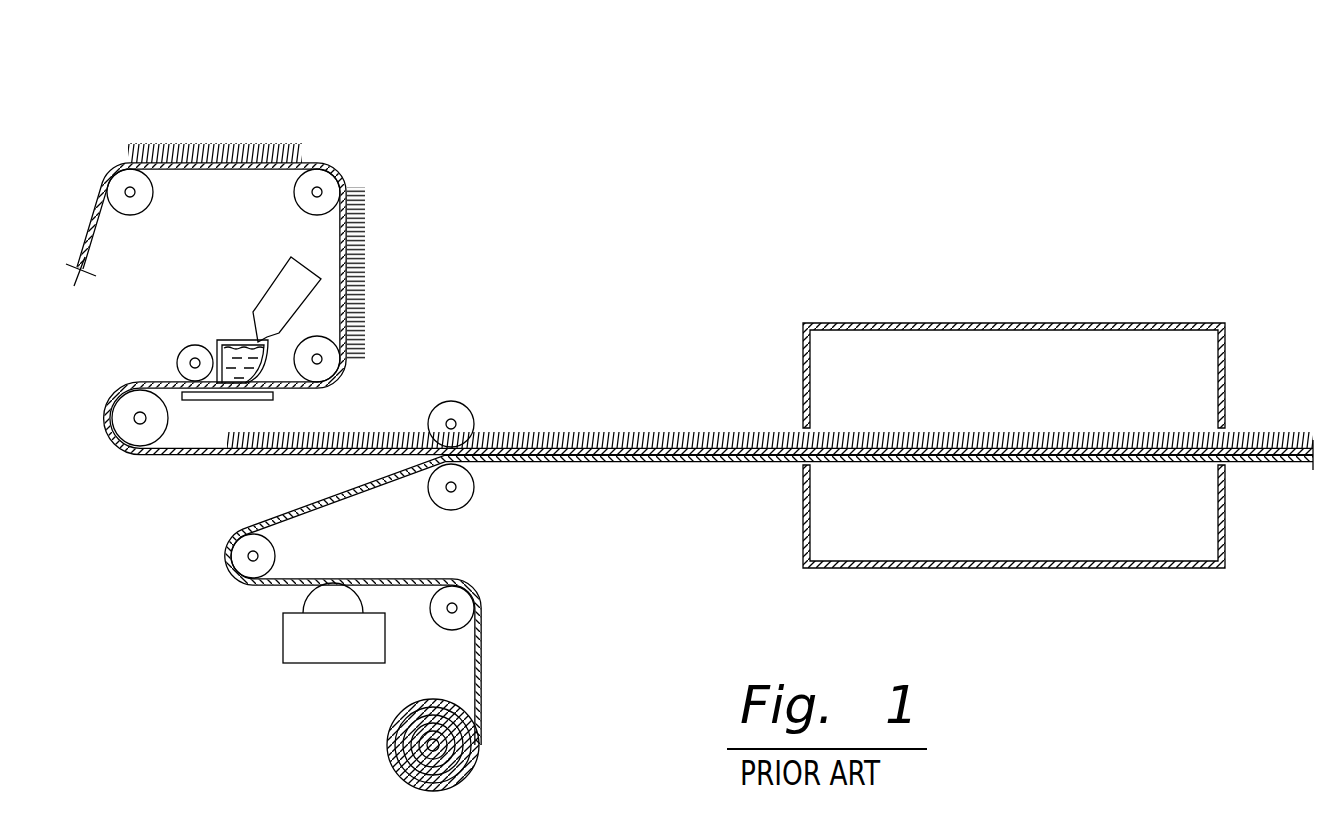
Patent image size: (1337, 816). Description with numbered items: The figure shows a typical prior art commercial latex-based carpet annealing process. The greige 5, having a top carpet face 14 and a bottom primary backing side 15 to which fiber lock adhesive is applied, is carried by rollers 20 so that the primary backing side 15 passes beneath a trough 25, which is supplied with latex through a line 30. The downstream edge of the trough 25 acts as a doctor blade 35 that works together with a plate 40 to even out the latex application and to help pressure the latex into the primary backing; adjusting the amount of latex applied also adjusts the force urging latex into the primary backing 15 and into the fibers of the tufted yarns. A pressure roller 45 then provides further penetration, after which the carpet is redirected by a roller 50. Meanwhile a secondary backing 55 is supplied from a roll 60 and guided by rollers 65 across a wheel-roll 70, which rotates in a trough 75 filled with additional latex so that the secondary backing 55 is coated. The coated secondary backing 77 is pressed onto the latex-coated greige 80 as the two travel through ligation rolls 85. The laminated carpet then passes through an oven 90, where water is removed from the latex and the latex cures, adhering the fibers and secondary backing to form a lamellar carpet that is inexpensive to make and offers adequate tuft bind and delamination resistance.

The greige 5 is at (212, 140).
The top carpet face 14 is at (300, 140).
The primary backing side 15 is at (232, 170).
The rollers 20 is at (320, 177).
The trough 25 is at (265, 367).
The line 30 is at (258, 308).
The doctor blade 35 is at (216, 392).
The plate 40 is at (181, 398).
The pressure roller 45 is at (178, 355).
The roller 50 is at (135, 398).
The secondary backing 55 is at (483, 658).
The roll 60 is at (478, 743).
The rollers 65 is at (240, 583).
The wheel-roll 70 is at (332, 588).
The trough 75 is at (310, 663).
The coated secondary backing 77 is at (343, 495).
The latex-coated greige 80 is at (295, 458).
The ligation rolls 85 is at (470, 478).
The oven 90 is at (1028, 552).